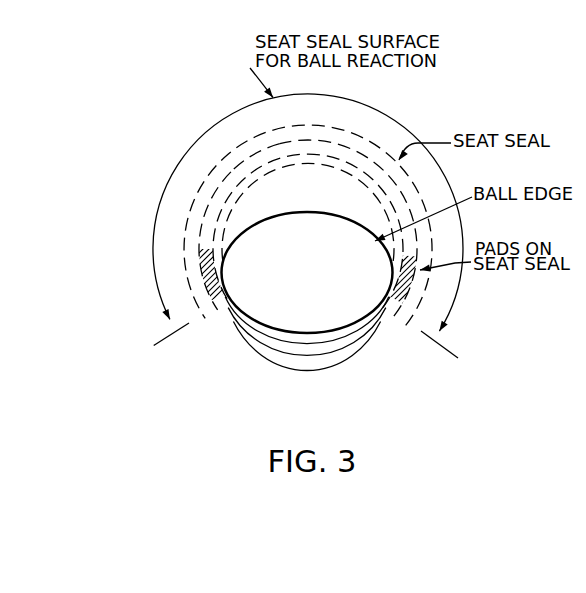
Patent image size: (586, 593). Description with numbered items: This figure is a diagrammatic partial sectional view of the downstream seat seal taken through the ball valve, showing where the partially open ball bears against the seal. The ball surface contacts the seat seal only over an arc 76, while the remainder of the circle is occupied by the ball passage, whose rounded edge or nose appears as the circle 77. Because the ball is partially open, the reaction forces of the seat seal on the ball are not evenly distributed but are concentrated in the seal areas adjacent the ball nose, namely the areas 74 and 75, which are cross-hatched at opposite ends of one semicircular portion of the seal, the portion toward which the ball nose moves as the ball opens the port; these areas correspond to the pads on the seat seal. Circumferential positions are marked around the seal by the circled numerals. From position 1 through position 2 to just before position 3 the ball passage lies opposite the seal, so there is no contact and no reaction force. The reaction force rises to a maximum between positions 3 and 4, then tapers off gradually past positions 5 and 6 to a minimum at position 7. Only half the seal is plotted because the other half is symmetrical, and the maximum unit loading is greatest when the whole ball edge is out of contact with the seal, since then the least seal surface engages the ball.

The position 1 is at (307, 350).
The position 2 is at (243, 327).
The position 3 is at (222, 307).
The position 4 is at (205, 243).
The position 5 is at (217, 197).
The position 6 is at (252, 160).
The position 7 is at (310, 143).
The area 74 is at (203, 283).
The area 75 is at (412, 290).
The arc 76 is at (155, 264).
The circle 77 is at (366, 243).